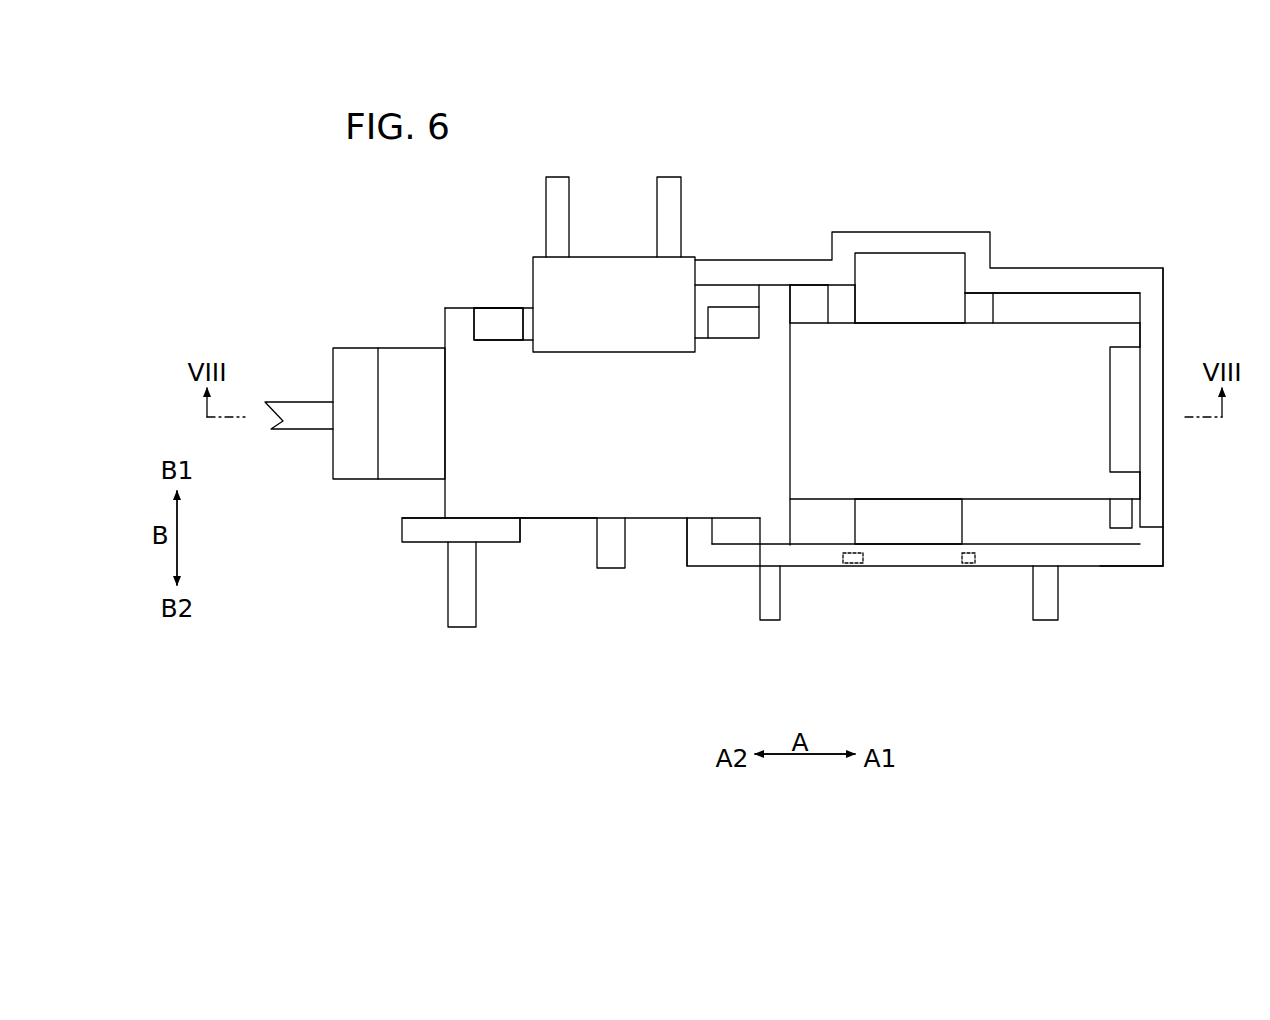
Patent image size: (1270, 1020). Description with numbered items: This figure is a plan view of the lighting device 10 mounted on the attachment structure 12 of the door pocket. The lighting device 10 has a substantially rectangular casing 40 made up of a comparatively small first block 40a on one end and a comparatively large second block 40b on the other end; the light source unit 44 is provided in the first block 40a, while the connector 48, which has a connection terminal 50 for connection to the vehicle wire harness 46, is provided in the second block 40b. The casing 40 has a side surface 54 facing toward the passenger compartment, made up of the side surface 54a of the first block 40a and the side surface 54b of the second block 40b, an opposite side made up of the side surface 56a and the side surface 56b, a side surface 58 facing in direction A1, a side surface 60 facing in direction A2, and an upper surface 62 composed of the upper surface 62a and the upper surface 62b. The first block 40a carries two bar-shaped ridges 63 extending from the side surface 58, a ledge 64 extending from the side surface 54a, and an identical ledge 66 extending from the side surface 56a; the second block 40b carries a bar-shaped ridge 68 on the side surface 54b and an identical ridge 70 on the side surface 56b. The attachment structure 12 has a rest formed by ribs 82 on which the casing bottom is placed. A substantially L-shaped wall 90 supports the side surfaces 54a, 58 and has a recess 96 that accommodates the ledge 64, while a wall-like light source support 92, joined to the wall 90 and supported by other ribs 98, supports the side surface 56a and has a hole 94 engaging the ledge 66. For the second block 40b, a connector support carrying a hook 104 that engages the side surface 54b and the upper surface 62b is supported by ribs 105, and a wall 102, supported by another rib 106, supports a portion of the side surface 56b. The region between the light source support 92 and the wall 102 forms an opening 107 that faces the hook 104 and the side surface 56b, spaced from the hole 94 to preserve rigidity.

The lighting device 10 is at (328, 336).
The attachment structure 12 is at (1170, 572).
The casing 40 is at (932, 314).
The first block 40a is at (1045, 340).
The light source unit 44 is at (1052, 254).
The second block 40b is at (498, 360).
The connector 48 is at (507, 294).
The wire harness 46 is at (297, 422).
The connection terminal 50 is at (355, 466).
The side surface 54 is at (740, 162).
The side surface of the first block 54a is at (877, 320).
The side surface of the second block 54b is at (733, 335).
The side surface of the first block 56a is at (1000, 502).
The side surface of the second block 56b is at (553, 520).
The side surface 58 is at (1125, 412).
The side surface 60 is at (442, 337).
The upper surface 62 is at (595, 655).
The upper surface of the first block 62a is at (817, 440).
The upper surface of the second block 62b is at (657, 500).
The bar-shaped ridges 63 is at (1130, 338).
The ledge 64 is at (922, 268).
The ledge 66 is at (908, 530).
The bar-shaped ridge 68 is at (773, 315).
The bar-shaped ridge 70 is at (775, 533).
The ribs 82 is at (612, 562).
The wall 90 is at (1147, 449).
The light source support 92 is at (1047, 550).
The hole 94 is at (868, 570).
The recess 96 is at (898, 262).
The ribs 98 is at (1040, 622).
The wall 102 is at (413, 528).
The hook 104 is at (618, 273).
The ribs 105 is at (557, 191).
The rib 106 is at (460, 617).
The opening 107 is at (537, 532).